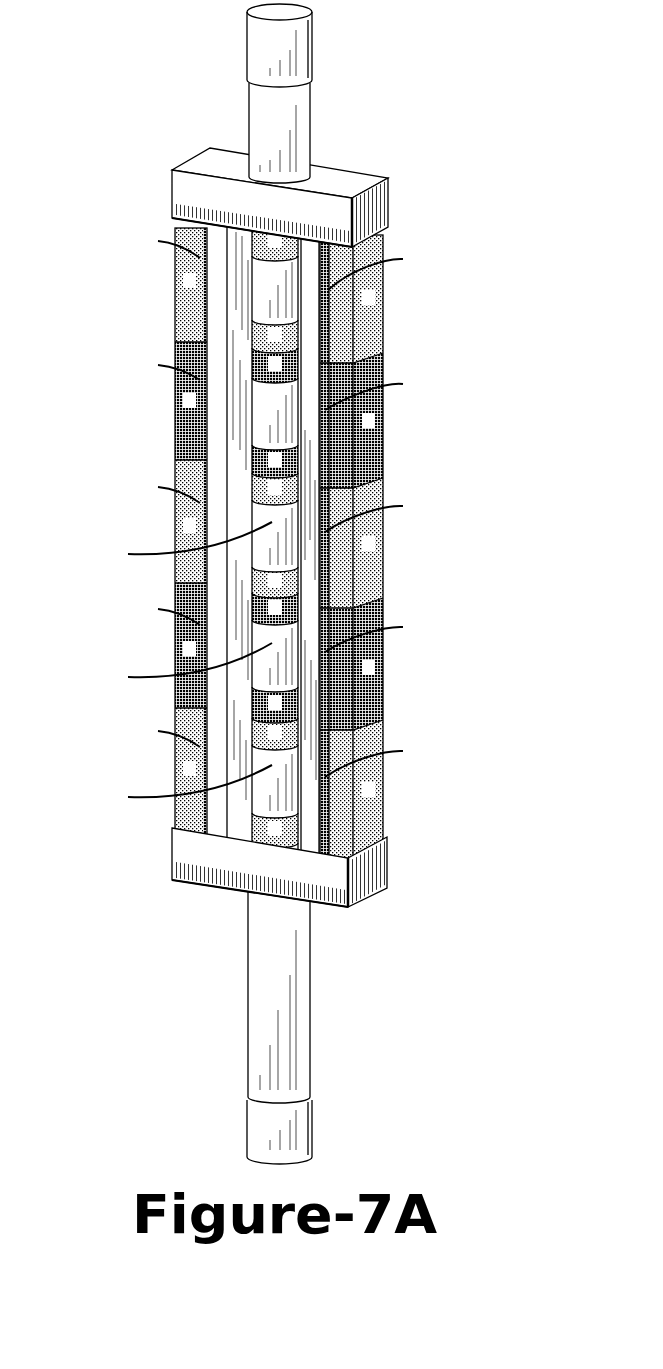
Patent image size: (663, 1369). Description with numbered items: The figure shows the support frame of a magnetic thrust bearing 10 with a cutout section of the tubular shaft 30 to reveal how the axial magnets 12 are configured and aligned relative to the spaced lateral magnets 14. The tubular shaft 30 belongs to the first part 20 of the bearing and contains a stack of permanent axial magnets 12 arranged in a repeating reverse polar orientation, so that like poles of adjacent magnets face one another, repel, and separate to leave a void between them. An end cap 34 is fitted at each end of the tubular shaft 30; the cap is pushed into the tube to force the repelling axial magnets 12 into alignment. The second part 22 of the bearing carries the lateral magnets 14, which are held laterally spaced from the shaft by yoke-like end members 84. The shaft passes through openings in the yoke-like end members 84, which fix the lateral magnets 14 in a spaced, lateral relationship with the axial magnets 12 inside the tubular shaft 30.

The magnetic thrust bearing 10 is at (290, 584).
The axial magnets 12 is at (320, 700).
The lateral magnets 14 is at (386, 320).
The first part 20 is at (243, 971).
The second part 22 is at (155, 198).
The tubular shaft 30 is at (310, 108).
The end cap 34 is at (262, 48).
The yoke-like end members 84 is at (205, 158).